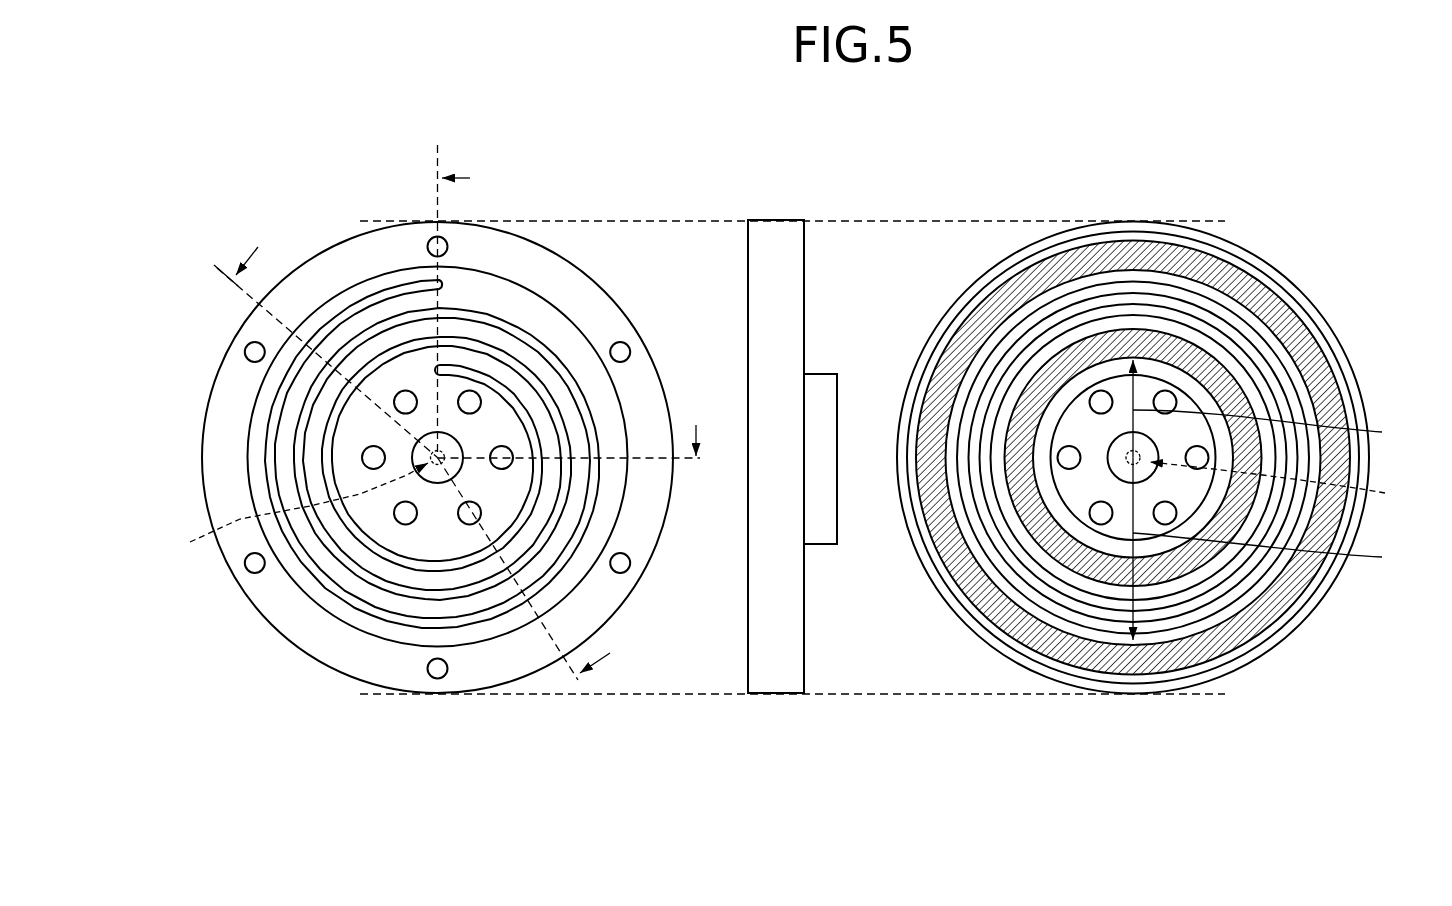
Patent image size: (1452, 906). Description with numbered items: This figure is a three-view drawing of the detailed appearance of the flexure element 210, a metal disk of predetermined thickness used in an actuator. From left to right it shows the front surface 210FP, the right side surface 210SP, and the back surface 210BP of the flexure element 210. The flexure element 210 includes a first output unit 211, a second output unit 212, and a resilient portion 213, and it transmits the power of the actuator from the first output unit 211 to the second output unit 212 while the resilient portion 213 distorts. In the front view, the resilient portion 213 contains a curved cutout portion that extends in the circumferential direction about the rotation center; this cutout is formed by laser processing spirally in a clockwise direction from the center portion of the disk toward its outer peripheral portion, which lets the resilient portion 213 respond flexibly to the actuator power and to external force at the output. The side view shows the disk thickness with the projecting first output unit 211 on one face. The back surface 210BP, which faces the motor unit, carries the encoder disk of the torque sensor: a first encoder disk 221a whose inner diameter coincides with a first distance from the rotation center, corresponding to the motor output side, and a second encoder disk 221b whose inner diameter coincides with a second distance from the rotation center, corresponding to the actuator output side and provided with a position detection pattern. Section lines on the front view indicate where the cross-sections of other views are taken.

The flexure element 210 is at (785, 419).
The front surface 210FP is at (742, 419).
The right side surface 210SP is at (835, 456).
The back surface 210BP is at (1166, 458).
The first output unit 211 is at (825, 537).
The second output unit 212 is at (242, 331).
The resilient portion 213 is at (253, 450).
The first encoder disk 221a is at (1252, 395).
The second encoder disk 221b is at (1288, 298).